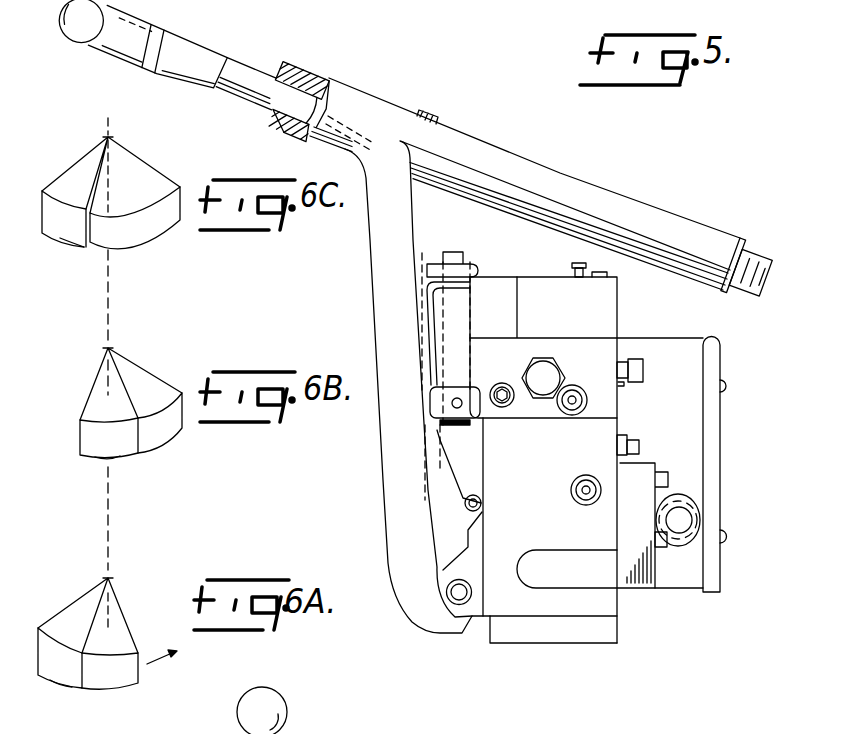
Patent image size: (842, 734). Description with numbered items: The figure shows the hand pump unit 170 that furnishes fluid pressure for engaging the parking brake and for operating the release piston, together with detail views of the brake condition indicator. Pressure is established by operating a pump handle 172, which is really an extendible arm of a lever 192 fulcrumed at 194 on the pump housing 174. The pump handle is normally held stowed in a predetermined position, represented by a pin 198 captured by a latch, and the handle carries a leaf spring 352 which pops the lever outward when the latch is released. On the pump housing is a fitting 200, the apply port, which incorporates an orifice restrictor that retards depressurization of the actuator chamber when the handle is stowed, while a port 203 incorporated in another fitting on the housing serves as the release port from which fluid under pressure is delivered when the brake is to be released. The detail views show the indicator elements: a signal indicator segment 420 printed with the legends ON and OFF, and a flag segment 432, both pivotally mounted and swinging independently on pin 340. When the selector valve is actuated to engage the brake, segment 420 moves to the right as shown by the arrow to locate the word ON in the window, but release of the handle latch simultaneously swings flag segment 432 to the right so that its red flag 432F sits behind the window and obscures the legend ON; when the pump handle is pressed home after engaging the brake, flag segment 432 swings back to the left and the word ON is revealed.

In FIG. 5, the pump handle 172 is at (253, 72).
In FIG. 5, the lever 192 is at (390, 470).
In FIG. 5, the fulcrum 194 is at (458, 598).
In FIG. 5, the pin 198 is at (460, 252).
In FIG. 5, the leaf spring 352 is at (430, 308).
In FIG. 5, the hand pump unit 170 is at (622, 318).
In FIG. 5, the release port 203 is at (645, 372).
In FIG. 5, the fitting 200 is at (622, 384).
In FIG. 5, the pump housing 174 is at (613, 609).
In FIG. 6A, the pin 340 is at (110, 563).
In FIG. 6C, the flag segment 432 is at (90, 163).
In FIG. 6B, the flag segment 432 is at (100, 395).
In FIG. 6A, the flag segment 432 is at (78, 608).
In FIG. 6C, the signal indicator segment 420 is at (143, 170).
In FIG. 6B, the signal indicator segment 420 is at (143, 380).
In FIG. 6A, the signal indicator segment 420 is at (120, 618).
In FIG. 6C, the red flag 432F is at (73, 238).
In FIG. 6B, the red flag 432F is at (104, 458).
In FIG. 6A, the red flag 432F is at (62, 680).